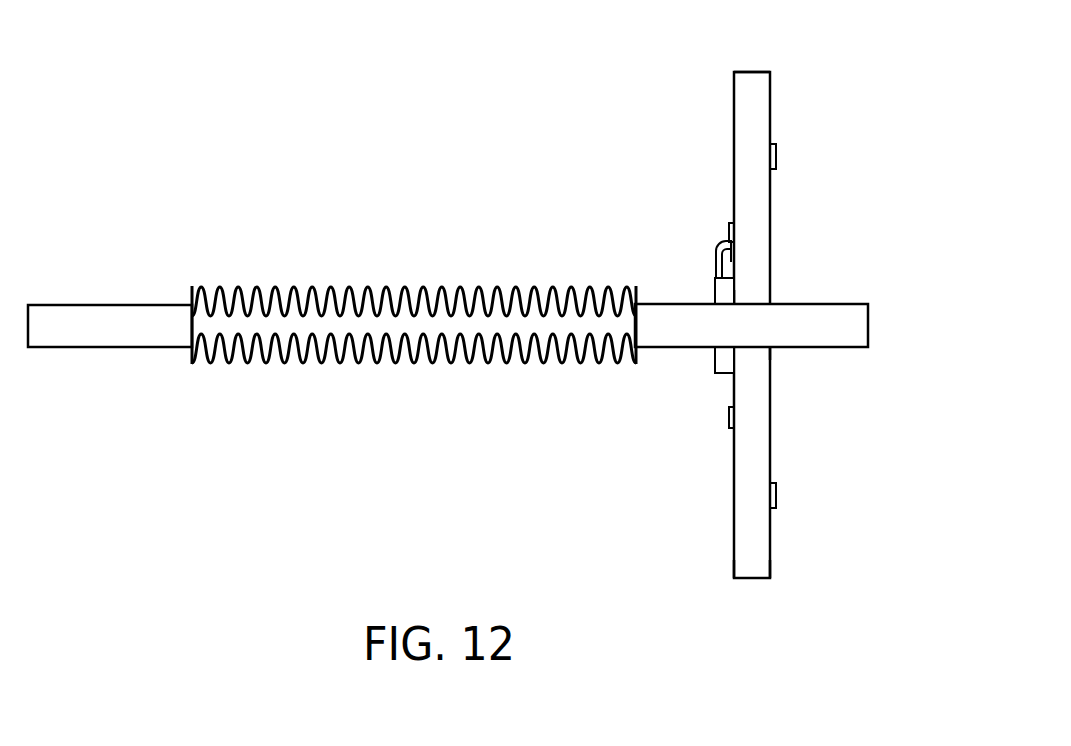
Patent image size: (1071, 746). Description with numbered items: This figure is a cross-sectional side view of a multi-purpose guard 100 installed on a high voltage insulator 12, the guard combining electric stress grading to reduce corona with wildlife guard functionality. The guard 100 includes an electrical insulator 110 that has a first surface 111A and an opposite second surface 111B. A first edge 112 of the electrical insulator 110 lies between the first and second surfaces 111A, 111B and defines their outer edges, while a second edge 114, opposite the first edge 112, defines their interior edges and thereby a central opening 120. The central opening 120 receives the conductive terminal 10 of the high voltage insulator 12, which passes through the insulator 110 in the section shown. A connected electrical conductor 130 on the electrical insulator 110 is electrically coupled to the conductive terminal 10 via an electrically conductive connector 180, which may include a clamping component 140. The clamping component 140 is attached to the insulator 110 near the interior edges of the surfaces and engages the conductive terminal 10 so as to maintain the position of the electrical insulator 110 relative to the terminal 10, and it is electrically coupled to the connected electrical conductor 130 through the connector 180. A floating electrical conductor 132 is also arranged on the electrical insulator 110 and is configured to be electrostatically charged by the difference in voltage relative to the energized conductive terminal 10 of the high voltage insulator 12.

The conductive terminal 10 is at (98, 305).
The high voltage insulator 12 is at (425, 287).
The multi-purpose guard 100 is at (739, 72).
The electrical insulator 110 is at (758, 127).
The first surface 111A is at (733, 542).
The second surface 111B is at (772, 542).
The first edge 112 is at (759, 70).
The second edge 114 is at (762, 302).
The central opening 120 is at (771, 348).
The connected electrical conductor 130 is at (728, 230).
The floating electrical conductor 132 is at (776, 153).
The clamping component 140 is at (715, 290).
The electrically conductive connector 180 is at (717, 252).